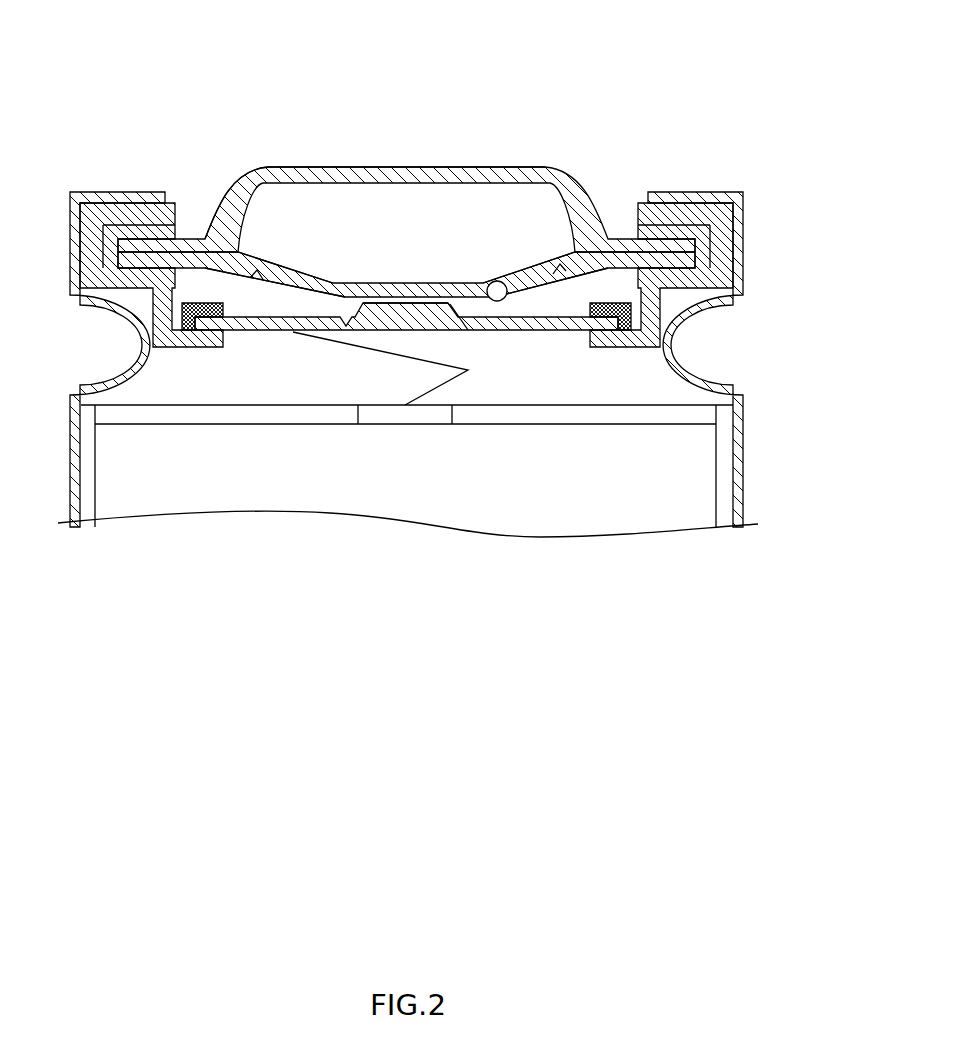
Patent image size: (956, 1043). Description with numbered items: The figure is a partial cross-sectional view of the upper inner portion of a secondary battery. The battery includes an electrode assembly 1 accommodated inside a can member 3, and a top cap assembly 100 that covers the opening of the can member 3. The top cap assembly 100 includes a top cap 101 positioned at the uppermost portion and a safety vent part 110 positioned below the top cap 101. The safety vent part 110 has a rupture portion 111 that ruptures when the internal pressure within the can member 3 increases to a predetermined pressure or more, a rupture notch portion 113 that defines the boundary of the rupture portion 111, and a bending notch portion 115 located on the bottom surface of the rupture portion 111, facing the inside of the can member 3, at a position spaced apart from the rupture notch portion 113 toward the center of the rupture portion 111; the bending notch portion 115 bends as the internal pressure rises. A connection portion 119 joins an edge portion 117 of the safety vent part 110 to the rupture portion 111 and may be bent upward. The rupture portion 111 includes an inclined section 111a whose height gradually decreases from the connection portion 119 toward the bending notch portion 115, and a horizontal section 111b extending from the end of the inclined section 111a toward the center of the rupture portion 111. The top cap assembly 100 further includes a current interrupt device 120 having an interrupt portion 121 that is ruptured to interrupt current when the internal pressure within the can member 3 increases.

The electrode assembly 1 is at (703, 487).
The can member 3 is at (744, 430).
The top cap assembly 100 is at (559, 135).
The top cap 101 is at (285, 167).
The safety vent part 110 is at (330, 253).
The rupture portion 111 is at (372, 82).
The inclined section 111a is at (530, 288).
The horizontal section 111b is at (400, 297).
The rupture notch portion 113 is at (572, 300).
The bending notch portion 115 is at (494, 281).
The edge portion 117 is at (744, 255).
The connection portion 119 is at (226, 200).
The current interrupt device 120 is at (631, 302).
The interrupt portion 121 is at (400, 318).